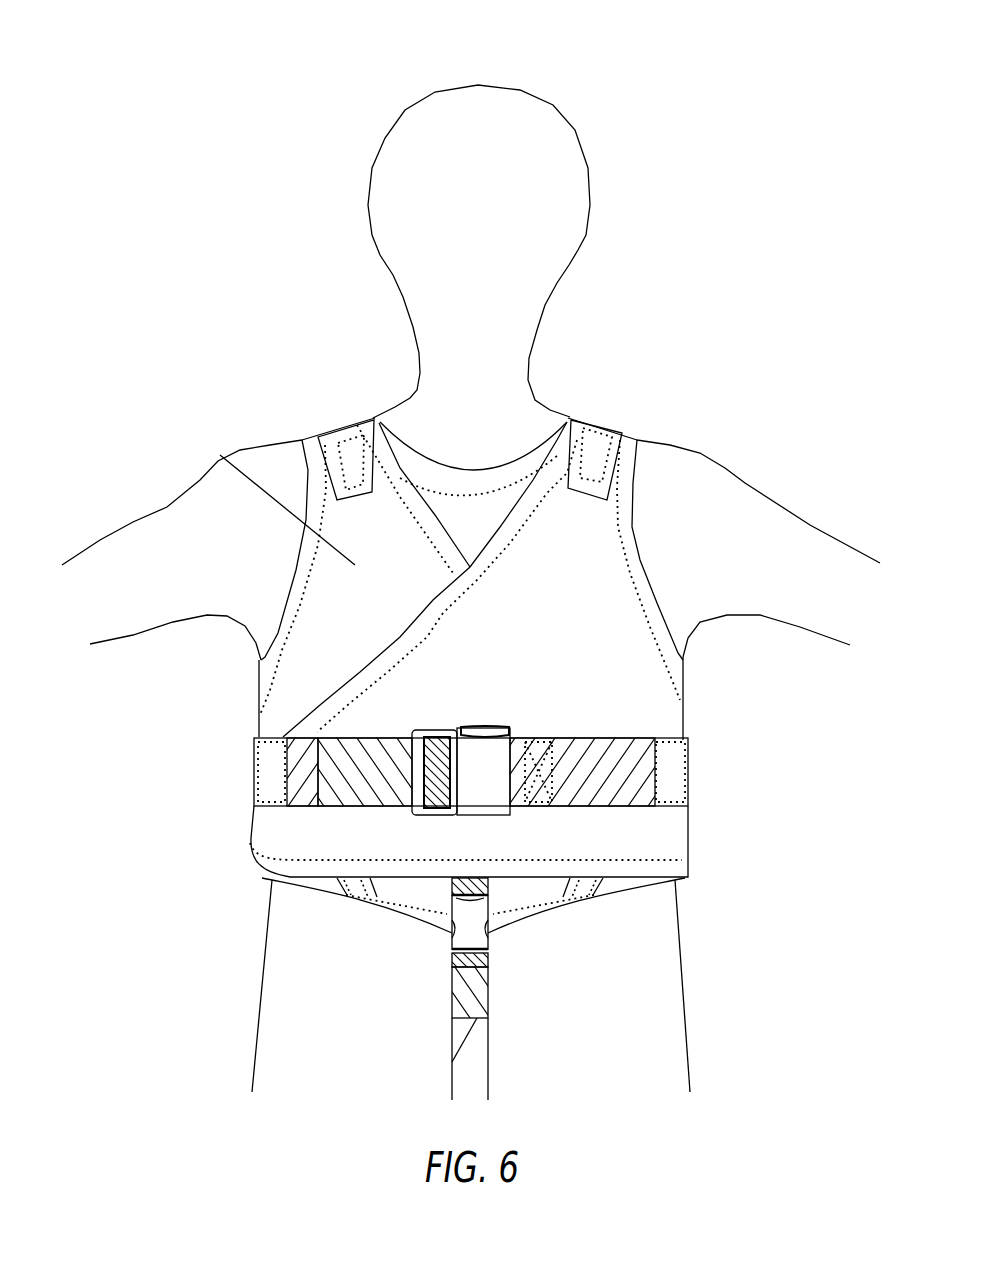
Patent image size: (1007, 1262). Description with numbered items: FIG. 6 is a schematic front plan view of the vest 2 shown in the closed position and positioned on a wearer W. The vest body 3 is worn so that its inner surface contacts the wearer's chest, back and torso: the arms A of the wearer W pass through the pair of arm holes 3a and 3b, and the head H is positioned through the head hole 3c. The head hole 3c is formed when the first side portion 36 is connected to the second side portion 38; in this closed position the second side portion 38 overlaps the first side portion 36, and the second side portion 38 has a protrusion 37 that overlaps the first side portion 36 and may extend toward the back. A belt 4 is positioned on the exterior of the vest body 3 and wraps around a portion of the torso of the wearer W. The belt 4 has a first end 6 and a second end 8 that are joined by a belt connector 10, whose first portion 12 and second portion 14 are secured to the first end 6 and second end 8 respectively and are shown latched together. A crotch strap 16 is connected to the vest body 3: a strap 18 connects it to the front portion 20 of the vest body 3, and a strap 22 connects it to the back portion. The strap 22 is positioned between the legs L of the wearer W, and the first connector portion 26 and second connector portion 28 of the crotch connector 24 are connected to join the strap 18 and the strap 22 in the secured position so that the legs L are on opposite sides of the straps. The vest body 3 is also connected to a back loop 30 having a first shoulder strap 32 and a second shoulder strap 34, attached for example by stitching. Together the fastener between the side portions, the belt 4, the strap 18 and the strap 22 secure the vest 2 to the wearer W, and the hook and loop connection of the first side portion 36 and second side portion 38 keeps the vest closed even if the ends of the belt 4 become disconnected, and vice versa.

The head H is at (450, 103).
The wearer W is at (533, 128).
The arm of wearer A is at (168, 515).
The legs L is at (270, 1007).
The vest 2 is at (667, 418).
The vest body 3 is at (627, 827).
The arm hole 3a is at (640, 560).
The arm hole 3b is at (300, 560).
The head hole 3c is at (397, 440).
The belt 4 is at (680, 768).
The first end 6 is at (387, 745).
The second end 8 is at (578, 755).
The belt connector 10 is at (485, 798).
The latchable portion 12 is at (434, 738).
The latchable portion 14 is at (490, 755).
The crotch strap 16 is at (455, 1065).
The strap 18 is at (457, 882).
The front portion 20 is at (222, 458).
The strap 22 is at (455, 1029).
The crotch connector 24 is at (457, 945).
The first connector portion 26 is at (483, 887).
The second connector portion 28 is at (483, 947).
The back loop 30 is at (594, 434).
The first shoulder strap 32 is at (327, 440).
The second shoulder strap 34 is at (615, 440).
The first side portion 36 is at (473, 477).
The protrusion 37 is at (262, 818).
The second side portion 38 is at (258, 836).